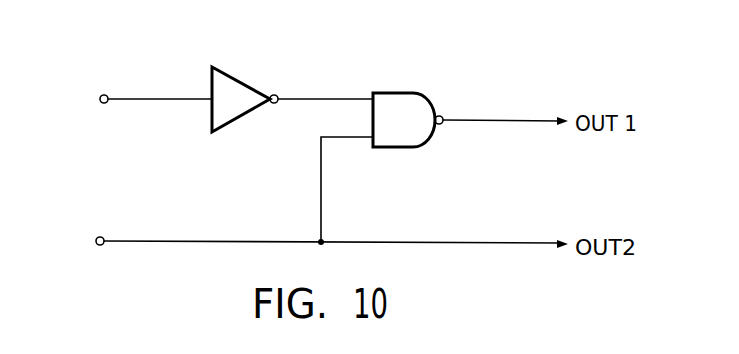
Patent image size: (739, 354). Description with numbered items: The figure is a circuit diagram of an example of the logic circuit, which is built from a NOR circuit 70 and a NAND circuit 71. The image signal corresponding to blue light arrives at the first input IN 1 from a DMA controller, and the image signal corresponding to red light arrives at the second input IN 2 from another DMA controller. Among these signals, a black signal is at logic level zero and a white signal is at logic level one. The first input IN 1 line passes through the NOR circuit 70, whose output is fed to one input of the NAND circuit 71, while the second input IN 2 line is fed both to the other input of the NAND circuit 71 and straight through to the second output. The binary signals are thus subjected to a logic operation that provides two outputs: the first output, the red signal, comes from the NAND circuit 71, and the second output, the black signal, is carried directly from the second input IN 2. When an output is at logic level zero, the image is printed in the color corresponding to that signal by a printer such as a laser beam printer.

The first input IN1 1 is at (131, 99).
The second input IN2 2 is at (302, 195).
The NOR circuit 70 is at (235, 78).
The NAND circuit 71 is at (407, 93).